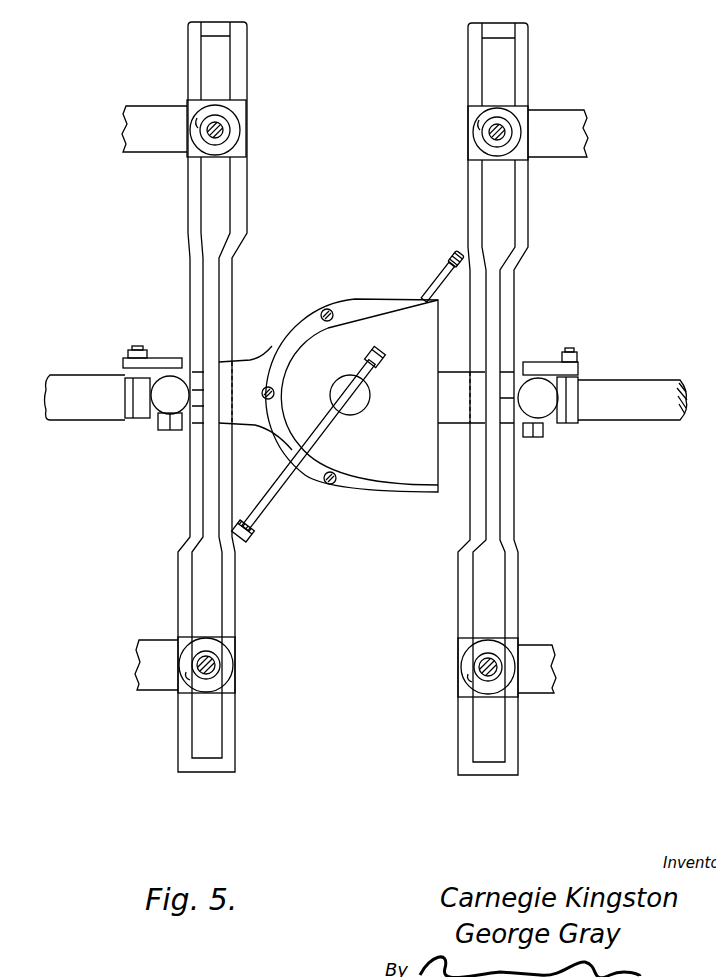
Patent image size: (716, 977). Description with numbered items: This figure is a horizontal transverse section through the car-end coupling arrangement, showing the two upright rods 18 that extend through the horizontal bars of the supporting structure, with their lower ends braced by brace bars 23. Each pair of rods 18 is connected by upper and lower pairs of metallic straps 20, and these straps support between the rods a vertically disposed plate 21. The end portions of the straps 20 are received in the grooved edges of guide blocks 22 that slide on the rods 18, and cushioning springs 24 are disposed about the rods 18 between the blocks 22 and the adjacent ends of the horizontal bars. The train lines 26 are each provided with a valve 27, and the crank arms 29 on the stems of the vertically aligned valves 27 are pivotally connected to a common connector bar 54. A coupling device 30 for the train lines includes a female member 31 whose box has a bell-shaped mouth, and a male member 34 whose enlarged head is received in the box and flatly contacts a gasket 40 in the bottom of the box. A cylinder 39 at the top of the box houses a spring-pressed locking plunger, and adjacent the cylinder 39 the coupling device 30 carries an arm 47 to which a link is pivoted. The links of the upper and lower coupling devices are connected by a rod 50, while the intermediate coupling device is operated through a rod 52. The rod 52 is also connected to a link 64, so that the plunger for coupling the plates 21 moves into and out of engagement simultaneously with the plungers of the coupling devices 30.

The rod 18 is at (490, 131).
The metallic strap 20 is at (238, 216).
The plate 21 is at (510, 505).
The guide block 22 is at (520, 111).
The brace bar 23 is at (566, 150).
The cushioning spring 24 is at (198, 143).
The train line 26 is at (73, 408).
The valve 27 is at (170, 394).
The crank arm 29 is at (156, 358).
The coupling device 30 is at (387, 475).
The female member 31 is at (286, 312).
The male member 34 is at (456, 418).
The cylinder 39 is at (370, 407).
The gasket 40 is at (283, 498).
The arm 47 is at (381, 361).
The rod 50 is at (252, 538).
The rod 52 is at (450, 276).
The connector bar 54 is at (134, 353).
The link 64 is at (432, 288).